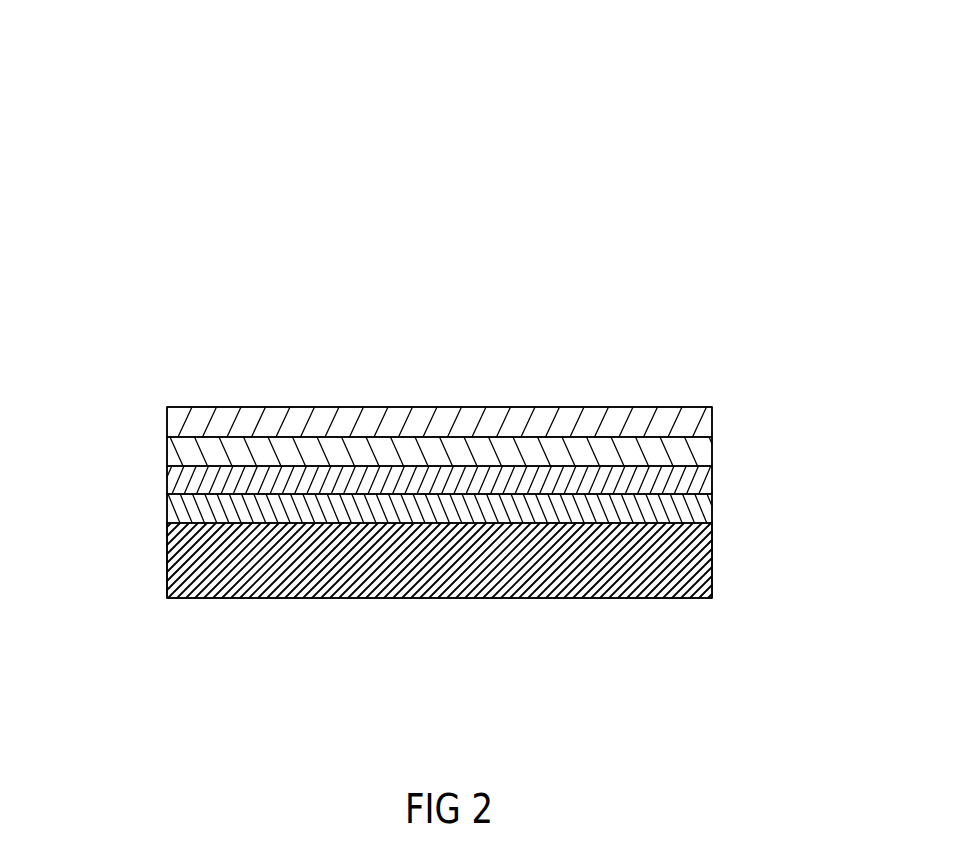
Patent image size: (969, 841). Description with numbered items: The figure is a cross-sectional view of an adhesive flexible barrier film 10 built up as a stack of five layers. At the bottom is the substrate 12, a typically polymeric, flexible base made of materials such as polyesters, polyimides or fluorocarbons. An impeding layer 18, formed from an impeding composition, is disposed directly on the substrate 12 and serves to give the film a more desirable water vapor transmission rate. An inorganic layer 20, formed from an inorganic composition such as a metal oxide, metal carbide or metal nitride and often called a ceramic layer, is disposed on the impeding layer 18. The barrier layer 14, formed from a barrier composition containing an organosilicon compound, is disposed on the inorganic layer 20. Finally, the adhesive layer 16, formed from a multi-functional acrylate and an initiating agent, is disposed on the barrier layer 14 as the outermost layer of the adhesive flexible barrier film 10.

The adhesive flexible barrier film 10 is at (300, 347).
The substrate 12 is at (712, 573).
The barrier layer 14 is at (167, 448).
The adhesive layer 16 is at (712, 410).
The impeding layer 18 is at (167, 512).
The inorganic layer 20 is at (712, 468).